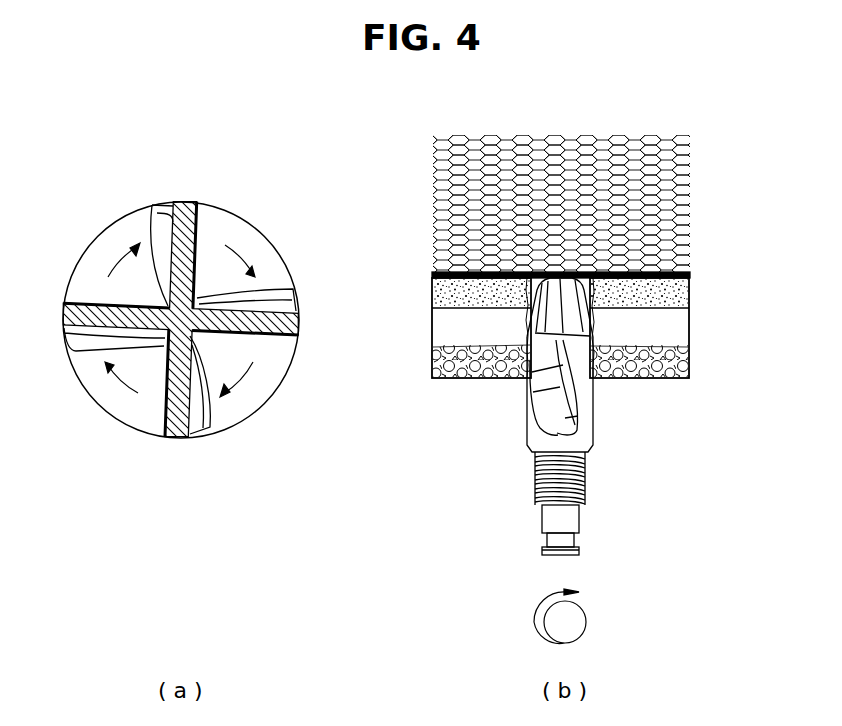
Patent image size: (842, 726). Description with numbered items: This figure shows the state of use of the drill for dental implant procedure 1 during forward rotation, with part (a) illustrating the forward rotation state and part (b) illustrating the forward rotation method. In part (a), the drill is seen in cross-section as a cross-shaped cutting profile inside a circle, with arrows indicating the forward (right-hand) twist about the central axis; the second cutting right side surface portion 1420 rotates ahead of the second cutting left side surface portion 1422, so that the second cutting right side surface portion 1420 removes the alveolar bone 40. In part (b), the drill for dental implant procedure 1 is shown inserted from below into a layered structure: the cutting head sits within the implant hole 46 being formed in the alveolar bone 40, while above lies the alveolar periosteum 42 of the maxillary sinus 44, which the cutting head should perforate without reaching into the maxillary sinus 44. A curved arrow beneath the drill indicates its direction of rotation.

The drill for dental implant procedure 1 is at (604, 561).
The alveolar bone 40 is at (683, 327).
The alveolar periosteum 42 is at (686, 270).
The maxillary sinus 44 is at (683, 219).
The implant hole 46 is at (522, 336).
The second cutting right side surface portion 1420 is at (199, 241).
The second cutting left side surface portion 1422 is at (153, 243).